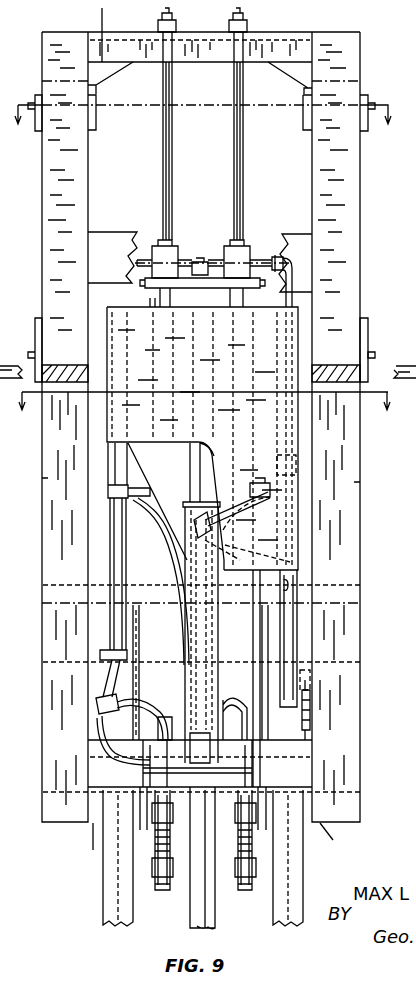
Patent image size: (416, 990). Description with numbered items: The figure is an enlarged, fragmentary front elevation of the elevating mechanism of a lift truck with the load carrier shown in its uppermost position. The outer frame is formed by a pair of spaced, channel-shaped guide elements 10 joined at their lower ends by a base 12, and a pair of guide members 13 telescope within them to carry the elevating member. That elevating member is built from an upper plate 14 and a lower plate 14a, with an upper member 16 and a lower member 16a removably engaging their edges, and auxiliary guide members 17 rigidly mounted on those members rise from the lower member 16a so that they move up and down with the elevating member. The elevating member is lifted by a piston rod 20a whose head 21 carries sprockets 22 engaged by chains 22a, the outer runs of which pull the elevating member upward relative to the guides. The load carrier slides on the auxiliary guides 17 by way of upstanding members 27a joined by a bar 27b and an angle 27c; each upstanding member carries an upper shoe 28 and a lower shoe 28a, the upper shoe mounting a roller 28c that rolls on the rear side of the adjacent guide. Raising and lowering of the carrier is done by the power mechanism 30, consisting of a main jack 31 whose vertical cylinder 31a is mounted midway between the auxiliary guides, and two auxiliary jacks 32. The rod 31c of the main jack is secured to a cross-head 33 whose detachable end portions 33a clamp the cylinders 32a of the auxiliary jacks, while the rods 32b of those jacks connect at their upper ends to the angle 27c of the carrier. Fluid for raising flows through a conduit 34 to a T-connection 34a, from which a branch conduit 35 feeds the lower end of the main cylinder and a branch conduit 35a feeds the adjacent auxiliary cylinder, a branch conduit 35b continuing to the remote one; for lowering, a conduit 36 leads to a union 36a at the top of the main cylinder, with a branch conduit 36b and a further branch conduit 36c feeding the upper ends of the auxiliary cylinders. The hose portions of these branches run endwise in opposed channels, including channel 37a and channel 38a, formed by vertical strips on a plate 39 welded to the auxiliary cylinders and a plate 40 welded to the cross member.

The guide elements 10 is at (96, 25).
The base 12 is at (208, 127).
The guide members 13 is at (108, 910).
The upper plate 14 is at (347, 627).
The lower plate 14a is at (343, 757).
The upper member 16 is at (43, 587).
The lower member 16a is at (43, 795).
The auxiliary guide members 17 is at (48, 478).
The piston rod 20a is at (195, 897).
The head 21 is at (172, 717).
The sprockets 22 is at (300, 720).
The chains 22a is at (233, 890).
The upstanding members 27a is at (48, 201).
The bar 27b is at (295, 233).
The angle 27c is at (275, 40).
The upper shoes 28 is at (38, 95).
The lower shoes 28a is at (30, 322).
The roller 28c is at (373, 356).
The power mechanism 30 is at (238, 710).
The main jack 31 is at (201, 632).
The cylinder 31a is at (210, 670).
The rod 31c is at (197, 447).
The auxiliary jacks 32 is at (258, 293).
The cylinders 32a is at (147, 297).
The rods 32b is at (237, 168).
The cross-head 33 is at (176, 264).
The end portions 33a is at (148, 283).
The conduit 34 is at (146, 672).
The T-connection 34a is at (94, 704).
The branch conduit 35 is at (123, 640).
The branch conduit 35a is at (100, 673).
The branch conduit 35b is at (159, 581).
The conduit 36 is at (276, 678).
The union 36a is at (242, 534).
The branch conduit 36b is at (293, 292).
The branch conduit 36c is at (217, 250).
The channel 37a is at (312, 668).
The channel 38a is at (108, 476).
The plate 39 is at (300, 473).
The plate 40 is at (268, 587).